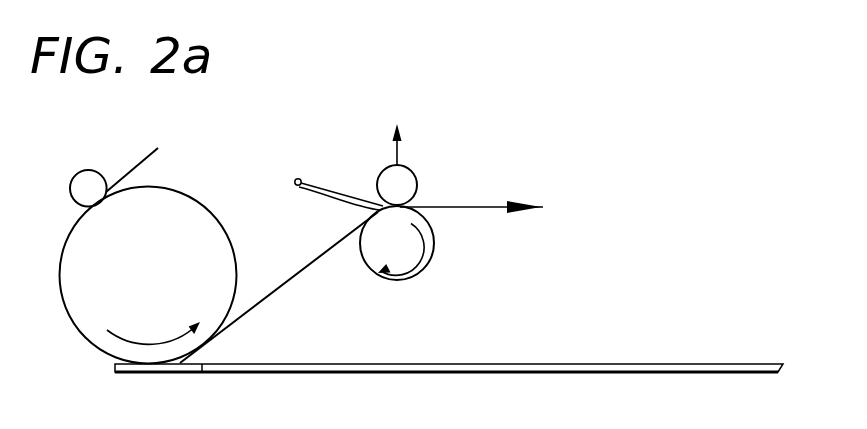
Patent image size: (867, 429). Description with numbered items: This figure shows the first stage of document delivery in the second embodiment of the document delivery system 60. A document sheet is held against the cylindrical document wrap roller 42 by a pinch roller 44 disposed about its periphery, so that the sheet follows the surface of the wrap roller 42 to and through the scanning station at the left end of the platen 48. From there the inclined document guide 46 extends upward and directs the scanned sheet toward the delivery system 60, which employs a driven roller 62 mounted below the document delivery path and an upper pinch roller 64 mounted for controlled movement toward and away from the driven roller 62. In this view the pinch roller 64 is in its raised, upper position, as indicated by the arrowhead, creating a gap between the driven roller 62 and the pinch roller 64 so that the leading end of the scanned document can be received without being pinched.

The document wrap roller 42 is at (63, 243).
The pinch roller 44 is at (78, 172).
The inclined document guide 46 is at (249, 314).
The platen 48 is at (568, 364).
The document delivery system 60 is at (548, 152).
The driven roller 62 is at (432, 252).
The upper pinch roller 64 is at (412, 172).